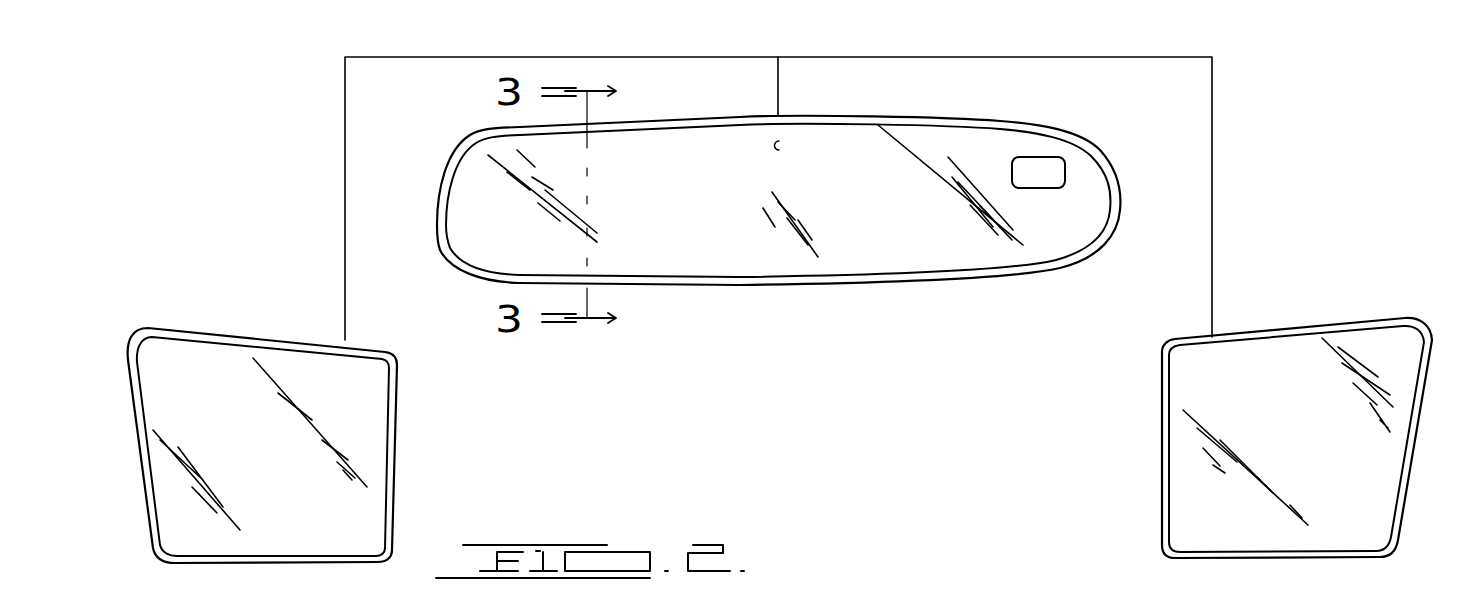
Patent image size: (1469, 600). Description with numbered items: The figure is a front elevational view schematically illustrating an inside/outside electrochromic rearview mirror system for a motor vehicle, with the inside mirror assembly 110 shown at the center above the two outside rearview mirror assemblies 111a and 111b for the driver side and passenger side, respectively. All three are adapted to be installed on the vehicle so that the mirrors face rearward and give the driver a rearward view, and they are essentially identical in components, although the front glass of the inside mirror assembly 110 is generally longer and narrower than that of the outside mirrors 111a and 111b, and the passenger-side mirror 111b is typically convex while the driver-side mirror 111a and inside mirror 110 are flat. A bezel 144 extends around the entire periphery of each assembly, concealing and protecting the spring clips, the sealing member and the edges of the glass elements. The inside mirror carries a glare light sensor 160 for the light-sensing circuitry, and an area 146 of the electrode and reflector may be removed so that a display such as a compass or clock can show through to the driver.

The inside mirror assembly 110 is at (455, 128).
The driver-side outside rearview mirror assembly 111a is at (427, 421).
The passenger-side outside rearview mirror assembly 111b is at (1141, 430).
The bezel 144 is at (717, 284).
The removed area of electrode and reflector 146 is at (1066, 173).
The glare light sensor 160 is at (783, 142).